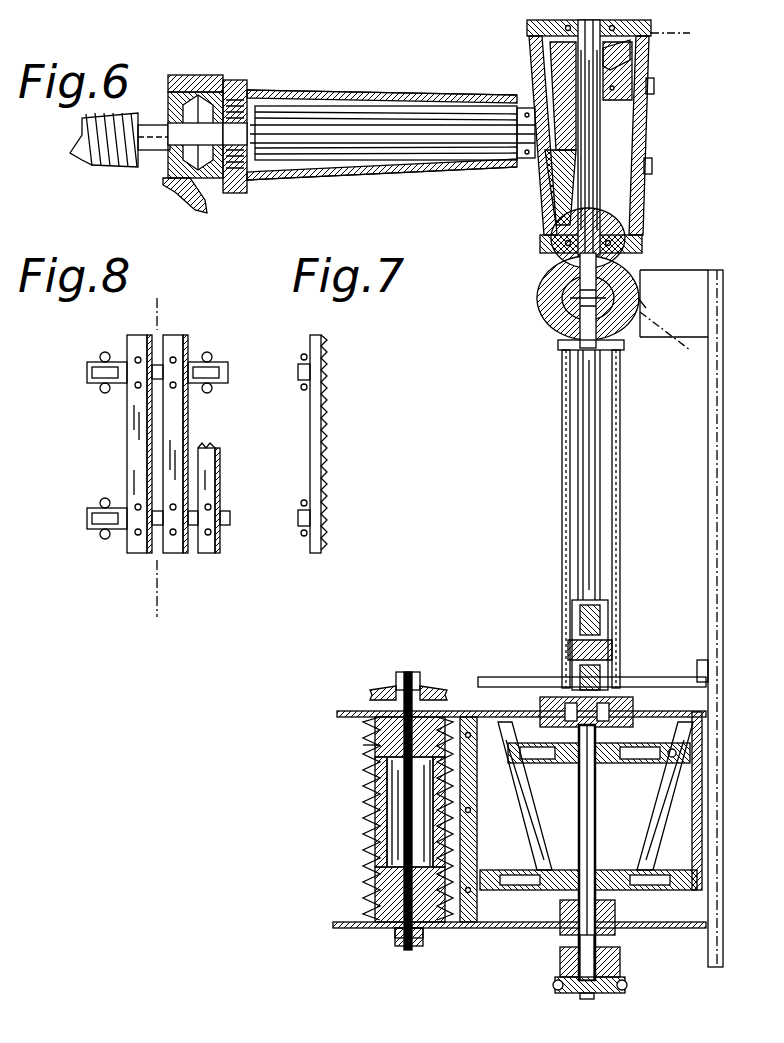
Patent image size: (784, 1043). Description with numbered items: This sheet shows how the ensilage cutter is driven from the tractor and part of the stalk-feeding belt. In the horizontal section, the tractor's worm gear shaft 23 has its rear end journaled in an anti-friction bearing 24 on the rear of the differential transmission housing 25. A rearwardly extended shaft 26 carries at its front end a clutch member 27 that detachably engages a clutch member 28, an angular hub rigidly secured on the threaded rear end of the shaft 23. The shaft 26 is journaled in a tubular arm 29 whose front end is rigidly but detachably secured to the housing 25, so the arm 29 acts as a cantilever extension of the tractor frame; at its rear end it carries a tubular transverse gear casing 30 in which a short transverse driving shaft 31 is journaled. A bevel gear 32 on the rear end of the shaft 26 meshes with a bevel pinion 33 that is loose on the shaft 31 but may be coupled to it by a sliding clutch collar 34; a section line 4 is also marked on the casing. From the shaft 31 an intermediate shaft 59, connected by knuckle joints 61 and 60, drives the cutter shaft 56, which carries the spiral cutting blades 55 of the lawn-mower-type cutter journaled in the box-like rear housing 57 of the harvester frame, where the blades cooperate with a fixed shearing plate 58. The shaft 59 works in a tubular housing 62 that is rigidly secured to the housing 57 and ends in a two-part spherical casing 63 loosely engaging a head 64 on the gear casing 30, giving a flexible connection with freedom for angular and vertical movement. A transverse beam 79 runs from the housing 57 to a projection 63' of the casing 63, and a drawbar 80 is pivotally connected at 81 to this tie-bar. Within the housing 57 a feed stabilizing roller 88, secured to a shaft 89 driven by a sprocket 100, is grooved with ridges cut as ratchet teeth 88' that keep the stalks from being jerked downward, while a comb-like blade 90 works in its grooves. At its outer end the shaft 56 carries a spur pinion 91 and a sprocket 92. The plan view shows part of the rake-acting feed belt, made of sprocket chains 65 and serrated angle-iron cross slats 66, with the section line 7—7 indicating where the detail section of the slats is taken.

In FIG. 6, the section line 4 is at (678, 34).
In FIG. 7, the section line 4 is at (666, 341).
In FIG. 6, the worm gear shaft 23 is at (150, 162).
In FIG. 6, the anti-friction bearing 24 is at (200, 92).
In FIG. 6, the differential transmission housing 25 is at (205, 210).
In FIG. 6, the rearwardly extended shaft 26 is at (343, 108).
In FIG. 6, the clutch member 27 is at (292, 92).
In FIG. 6, the clutch member 28 is at (250, 90).
In FIG. 6, the tubular arm 29 is at (452, 176).
In FIG. 6, the transverse gear casing 30 is at (644, 212).
In FIG. 6, the transverse driving shaft 31 is at (600, 165).
In FIG. 6, the bevel gear 32 is at (552, 195).
In FIG. 6, the bevel pinion 33 is at (628, 55).
In FIG. 6, the clutch collar 34 is at (610, 118).
In FIG. 7, the spiral cutting blades 55 is at (650, 745).
In FIG. 7, the cutter shaft 56 is at (580, 800).
In FIG. 7, the box-like rear portion of the harvester frame 57 is at (478, 710).
In FIG. 7, the shearing plate 58 is at (470, 928).
In FIG. 7, the intermediate shaft 59 is at (600, 510).
In FIG. 7, the knuckle joint 60 is at (578, 640).
In FIG. 7, the knuckle joint 61 is at (628, 325).
In FIG. 7, the tubular housing 62 is at (622, 470).
In FIG. 7, the spherical casing 63 is at (562, 274).
In FIG. 7, the projection 63' is at (674, 285).
In FIG. 7, the head 64 is at (550, 332).
In FIG. 8, the sprocket chains 65 is at (218, 362).
In FIG. 8, the angle iron cross slats 66 is at (128, 424).
In FIG. 8, the section line 7 is at (164, 451).
In FIG. 7, the transverse beam 79 is at (723, 530).
In FIG. 7, the drawbar 80 is at (485, 677).
In FIG. 7, the pivotal connection 81 is at (697, 668).
In FIG. 7, the feed stabilizing roller 88 is at (376, 819).
In FIG. 7, the ratchet teeth 88' is at (338, 761).
In FIG. 7, the shaft 89 is at (392, 842).
In FIG. 7, the comb-like blade 90 is at (450, 928).
In FIG. 7, the spur pinion 91 is at (622, 963).
In FIG. 7, the sprocket 92 is at (625, 987).
In FIG. 7, the sprocket 100 is at (372, 694).